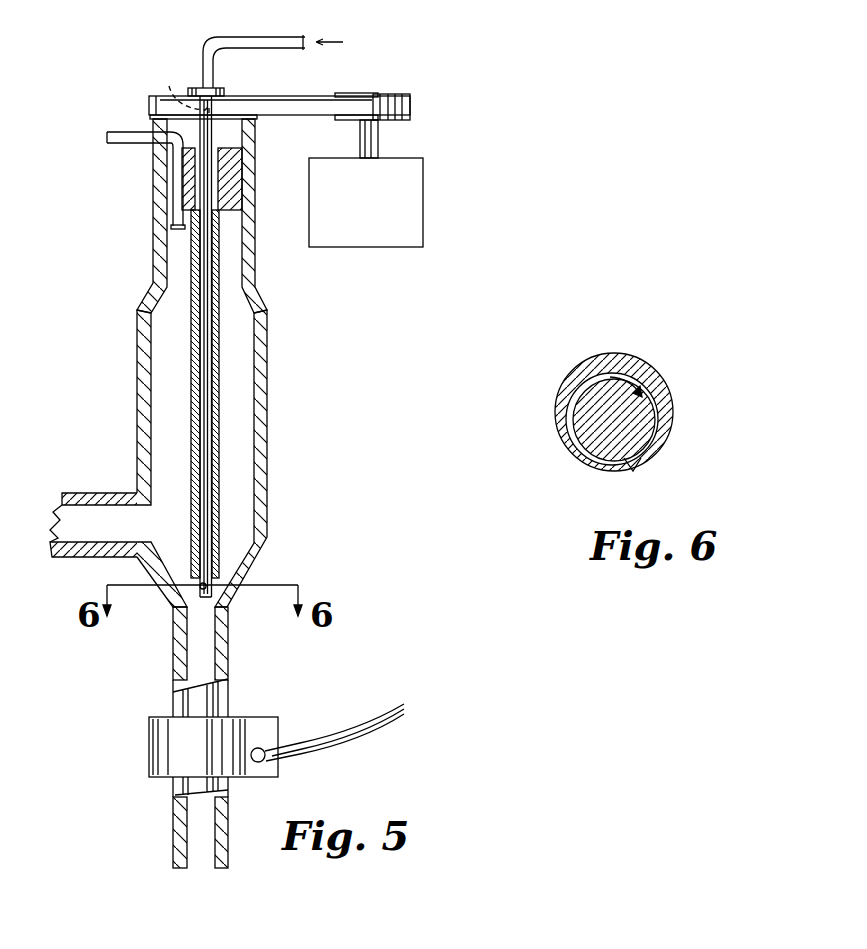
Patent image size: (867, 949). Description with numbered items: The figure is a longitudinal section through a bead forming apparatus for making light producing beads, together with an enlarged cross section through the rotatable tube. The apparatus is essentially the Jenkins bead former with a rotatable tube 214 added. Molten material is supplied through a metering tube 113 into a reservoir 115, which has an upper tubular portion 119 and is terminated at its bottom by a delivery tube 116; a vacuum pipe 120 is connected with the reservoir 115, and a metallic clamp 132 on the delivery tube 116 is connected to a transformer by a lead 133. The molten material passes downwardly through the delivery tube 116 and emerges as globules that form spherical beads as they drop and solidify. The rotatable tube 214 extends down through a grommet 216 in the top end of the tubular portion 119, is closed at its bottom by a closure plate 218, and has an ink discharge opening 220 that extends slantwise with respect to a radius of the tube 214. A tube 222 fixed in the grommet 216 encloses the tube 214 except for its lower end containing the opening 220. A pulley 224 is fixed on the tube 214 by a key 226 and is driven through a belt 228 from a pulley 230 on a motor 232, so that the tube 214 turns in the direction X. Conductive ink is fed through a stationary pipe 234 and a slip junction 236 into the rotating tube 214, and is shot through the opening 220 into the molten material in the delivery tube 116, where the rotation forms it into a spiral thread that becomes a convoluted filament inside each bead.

In FIG. 5, the metering tube 113 is at (120, 490).
In FIG. 5, the reservoir 115 is at (268, 404).
In FIG. 5, the delivery tube 116 is at (228, 640).
In FIG. 5, the tubular portion 119 is at (255, 188).
In FIG. 5, the vacuum pipe 120 is at (133, 140).
In FIG. 5, the metallic clamp 132 is at (150, 742).
In FIG. 5, the lead 133 is at (350, 723).
In FIG. 5, the rotatable tube 214 is at (210, 142).
In FIG. 6, the rotatable tube 214 is at (673, 410).
In FIG. 5, the grommet 216 is at (163, 130).
In FIG. 5, the closure plate 218 is at (207, 597).
In FIG. 6, the closure plate 218 is at (597, 437).
In FIG. 5, the ink discharge opening 220 is at (213, 586).
In FIG. 6, the ink discharge opening 220 is at (641, 472).
In FIG. 5, the tube 222 is at (222, 445).
In FIG. 5, the pulley 224 is at (243, 94).
In FIG. 5, the key 226 is at (165, 80).
In FIG. 5, the belt 228 is at (310, 108).
In FIG. 5, the pulley 230 is at (393, 97).
In FIG. 5, the motor 232 is at (425, 207).
In FIG. 5, the pipe 234 is at (270, 38).
In FIG. 5, the slip junction 236 is at (195, 84).
In FIG. 6, the direction of rotation X is at (627, 377).